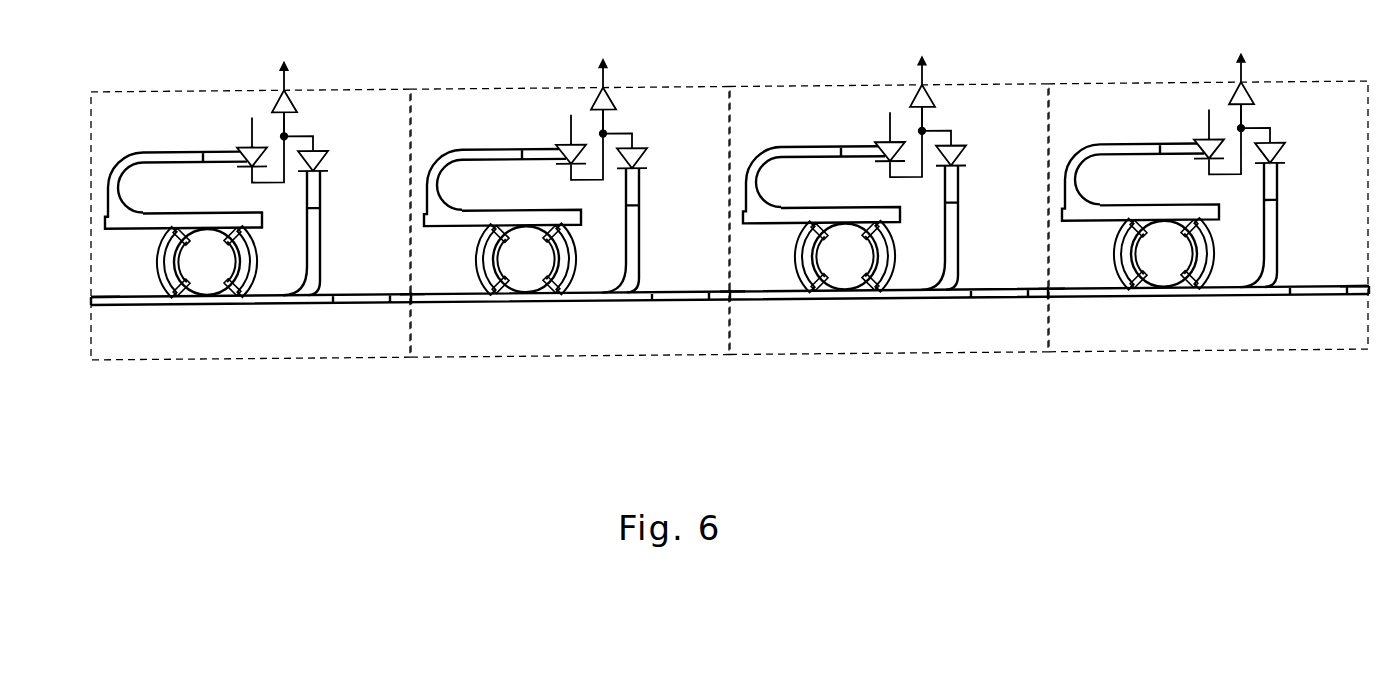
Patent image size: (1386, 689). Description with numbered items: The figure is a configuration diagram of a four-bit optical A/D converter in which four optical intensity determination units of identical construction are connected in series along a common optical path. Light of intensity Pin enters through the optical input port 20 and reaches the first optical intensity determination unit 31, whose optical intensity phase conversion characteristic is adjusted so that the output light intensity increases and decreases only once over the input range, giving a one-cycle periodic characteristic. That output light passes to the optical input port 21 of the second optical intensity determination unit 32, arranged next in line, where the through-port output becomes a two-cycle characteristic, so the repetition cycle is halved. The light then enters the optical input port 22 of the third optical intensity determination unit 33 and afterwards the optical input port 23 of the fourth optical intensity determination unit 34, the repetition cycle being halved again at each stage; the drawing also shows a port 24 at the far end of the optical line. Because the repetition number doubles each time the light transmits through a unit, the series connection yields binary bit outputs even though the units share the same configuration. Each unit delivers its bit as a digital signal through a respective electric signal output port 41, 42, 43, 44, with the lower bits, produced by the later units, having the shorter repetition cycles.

The optical input port 20 is at (118, 304).
The optical input port 21 is at (432, 304).
The optical input port 22 is at (752, 304).
The optical input port 23 is at (1072, 304).
The bus connection point 24 is at (1353, 305).
The first optical intensity determination unit 31 is at (251, 234).
The second optical intensity determination unit 32 is at (570, 231).
The third optical intensity determination unit 33 is at (889, 229).
The fourth optical intensity determination unit 34 is at (1208, 226).
The electric signal output port 41 is at (290, 91).
The electric signal output port 42 is at (608, 88).
The electric signal output port 43 is at (927, 86).
The electric signal output port 44 is at (1246, 83).